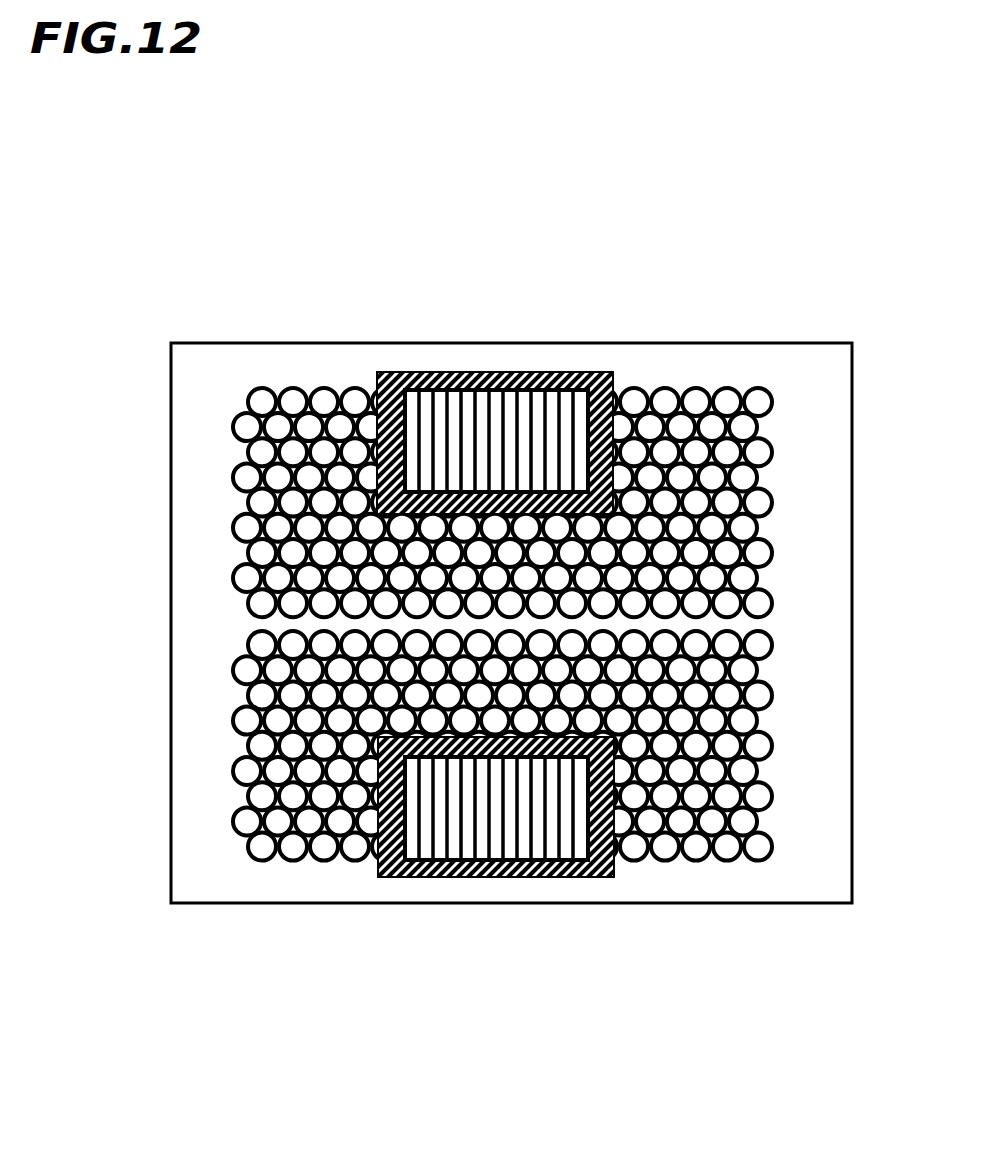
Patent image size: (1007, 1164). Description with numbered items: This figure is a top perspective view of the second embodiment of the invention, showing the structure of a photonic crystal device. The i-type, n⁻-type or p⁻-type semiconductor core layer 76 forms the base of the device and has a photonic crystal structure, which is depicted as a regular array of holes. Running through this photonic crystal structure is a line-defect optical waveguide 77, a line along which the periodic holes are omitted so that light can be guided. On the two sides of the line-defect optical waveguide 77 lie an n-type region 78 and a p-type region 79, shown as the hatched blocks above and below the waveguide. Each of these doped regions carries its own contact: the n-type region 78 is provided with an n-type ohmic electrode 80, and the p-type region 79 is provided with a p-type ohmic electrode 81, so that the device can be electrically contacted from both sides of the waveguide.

The semiconductor core layer 76 is at (812, 784).
The line-defect optical waveguide 77 is at (748, 626).
The n-type region 78 is at (600, 376).
The p-type region 79 is at (598, 875).
The n-type ohmic electrode 80 is at (427, 392).
The p-type ohmic electrode 81 is at (483, 834).